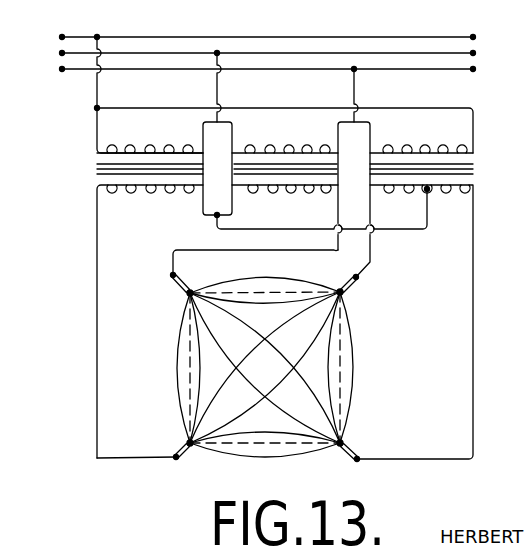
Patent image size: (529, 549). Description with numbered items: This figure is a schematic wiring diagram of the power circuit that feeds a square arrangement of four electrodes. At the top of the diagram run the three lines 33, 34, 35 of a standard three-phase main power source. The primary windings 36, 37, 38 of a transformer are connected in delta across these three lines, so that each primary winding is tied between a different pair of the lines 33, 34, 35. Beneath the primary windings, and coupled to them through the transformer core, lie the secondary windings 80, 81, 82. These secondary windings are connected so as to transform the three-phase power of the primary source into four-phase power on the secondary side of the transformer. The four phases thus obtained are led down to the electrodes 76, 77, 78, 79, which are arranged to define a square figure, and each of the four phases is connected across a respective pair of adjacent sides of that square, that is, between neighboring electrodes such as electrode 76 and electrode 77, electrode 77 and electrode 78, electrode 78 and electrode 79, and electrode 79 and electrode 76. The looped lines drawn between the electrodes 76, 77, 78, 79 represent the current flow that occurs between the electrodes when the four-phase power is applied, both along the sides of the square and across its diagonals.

The line 33 is at (62, 37).
The line 34 is at (62, 53).
The line 35 is at (62, 69).
The primary winding 36 is at (152, 150).
The primary winding 37 is at (292, 150).
The primary winding 38 is at (422, 150).
The secondary winding 80 is at (164, 189).
The secondary winding 81 is at (297, 189).
The secondary winding 82 is at (413, 189).
The electrode 76 is at (178, 286).
The electrode 77 is at (359, 284).
The electrode 78 is at (347, 460).
The electrode 79 is at (188, 453).